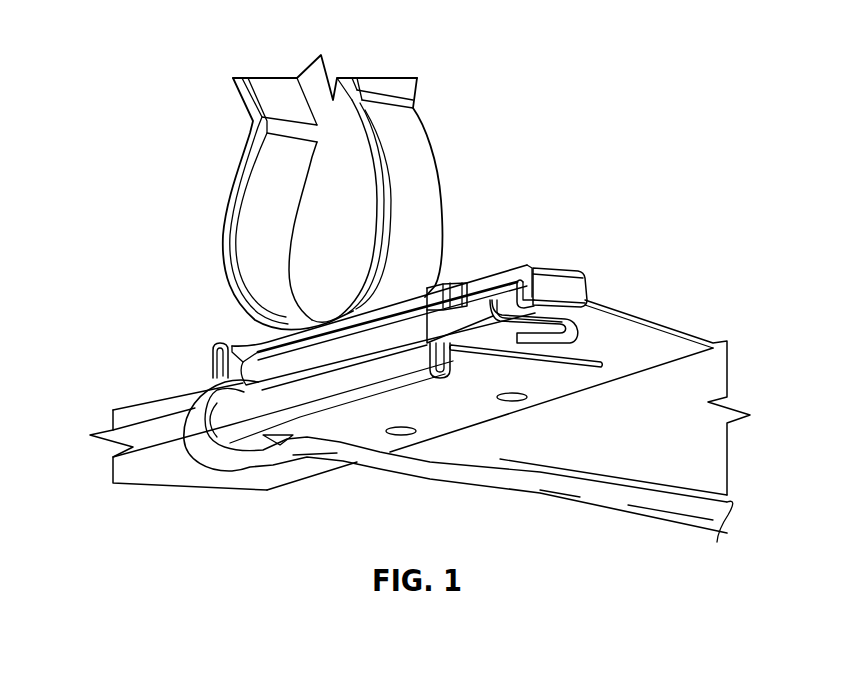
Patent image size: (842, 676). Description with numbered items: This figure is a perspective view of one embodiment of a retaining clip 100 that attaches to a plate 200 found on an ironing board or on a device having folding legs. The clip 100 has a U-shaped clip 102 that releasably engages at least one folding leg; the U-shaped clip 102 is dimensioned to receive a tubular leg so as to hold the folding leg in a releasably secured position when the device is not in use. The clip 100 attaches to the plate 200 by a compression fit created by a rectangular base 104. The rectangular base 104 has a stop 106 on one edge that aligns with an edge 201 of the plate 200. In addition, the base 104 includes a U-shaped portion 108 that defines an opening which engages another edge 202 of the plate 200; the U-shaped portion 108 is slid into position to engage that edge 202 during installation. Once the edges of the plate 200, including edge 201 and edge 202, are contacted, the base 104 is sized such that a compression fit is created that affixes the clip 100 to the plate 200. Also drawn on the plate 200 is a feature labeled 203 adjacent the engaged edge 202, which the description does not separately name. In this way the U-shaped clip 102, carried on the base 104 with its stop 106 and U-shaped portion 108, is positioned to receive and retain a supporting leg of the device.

The retaining clip 100 is at (170, 42).
The U-shaped clip 102 is at (277, 85).
The rectangular base 104 is at (472, 282).
The stop 106 is at (440, 283).
The U-shaped portion 108 is at (563, 287).
The plate 200 is at (657, 322).
The edge 201 is at (500, 313).
The edge 202 is at (529, 280).
The tab 203 is at (537, 342).